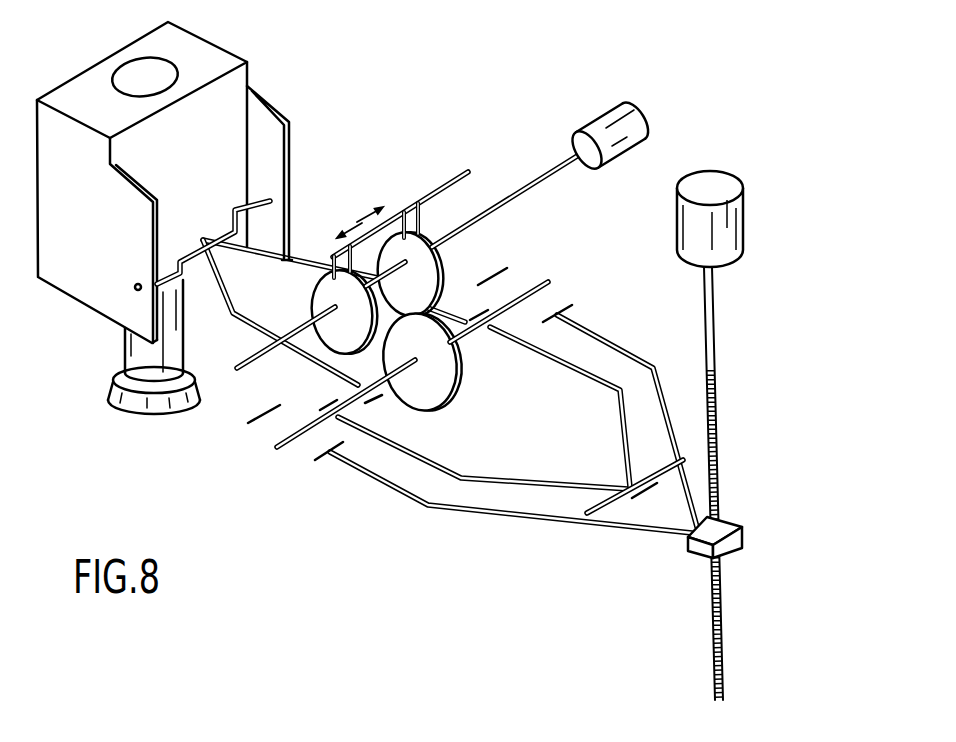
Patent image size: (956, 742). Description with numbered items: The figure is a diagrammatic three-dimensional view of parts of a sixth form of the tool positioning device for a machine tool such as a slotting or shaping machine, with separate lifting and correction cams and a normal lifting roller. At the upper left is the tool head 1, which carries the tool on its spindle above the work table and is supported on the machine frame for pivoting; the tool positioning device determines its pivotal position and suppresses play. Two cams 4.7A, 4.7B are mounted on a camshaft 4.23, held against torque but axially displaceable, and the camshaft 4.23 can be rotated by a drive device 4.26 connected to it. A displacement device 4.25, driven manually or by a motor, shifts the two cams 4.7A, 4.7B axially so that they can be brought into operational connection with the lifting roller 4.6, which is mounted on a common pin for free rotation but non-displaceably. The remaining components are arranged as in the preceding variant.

The tool head 1 is at (68, 97).
The camshaft 4.23 is at (258, 358).
The displacement device 4.25 is at (447, 180).
The drive device 4.26 is at (607, 110).
The cam 4.7A is at (312, 300).
The cam 4.7B is at (440, 268).
The lifting roller 4.6 is at (432, 392).